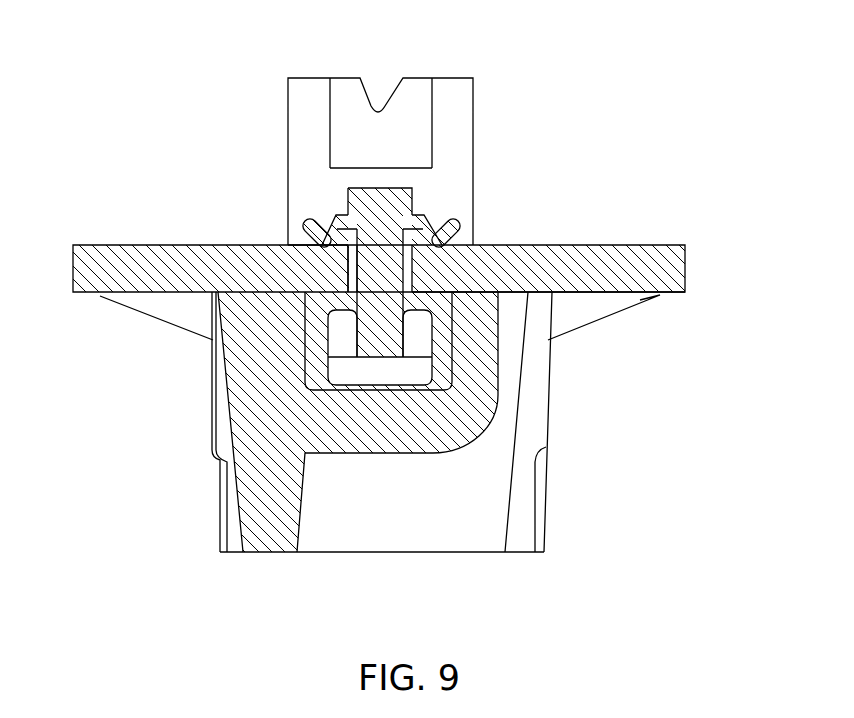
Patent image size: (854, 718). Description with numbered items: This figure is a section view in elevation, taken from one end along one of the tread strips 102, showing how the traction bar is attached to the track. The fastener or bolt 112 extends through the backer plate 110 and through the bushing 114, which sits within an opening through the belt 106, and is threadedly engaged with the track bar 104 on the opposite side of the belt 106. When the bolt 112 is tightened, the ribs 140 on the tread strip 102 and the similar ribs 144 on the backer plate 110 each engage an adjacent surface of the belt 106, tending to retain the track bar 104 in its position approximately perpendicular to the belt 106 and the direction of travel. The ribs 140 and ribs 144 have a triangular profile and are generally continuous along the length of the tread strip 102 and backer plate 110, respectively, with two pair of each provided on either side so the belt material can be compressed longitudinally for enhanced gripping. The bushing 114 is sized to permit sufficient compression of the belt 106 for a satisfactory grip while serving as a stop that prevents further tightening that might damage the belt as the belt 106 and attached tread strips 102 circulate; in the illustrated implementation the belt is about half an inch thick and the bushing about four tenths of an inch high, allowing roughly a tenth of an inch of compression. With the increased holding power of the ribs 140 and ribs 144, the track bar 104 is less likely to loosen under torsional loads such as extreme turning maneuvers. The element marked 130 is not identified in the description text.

The tread strip 102 is at (542, 537).
The track bar 104 is at (450, 382).
The belt 106 is at (617, 245).
The backer plate 110 is at (462, 230).
The bolt 112 is at (412, 190).
The bushing 114 is at (412, 273).
The clip 130 is at (473, 93).
The ribs 140 is at (360, 250).
The ribs 144 is at (352, 251).